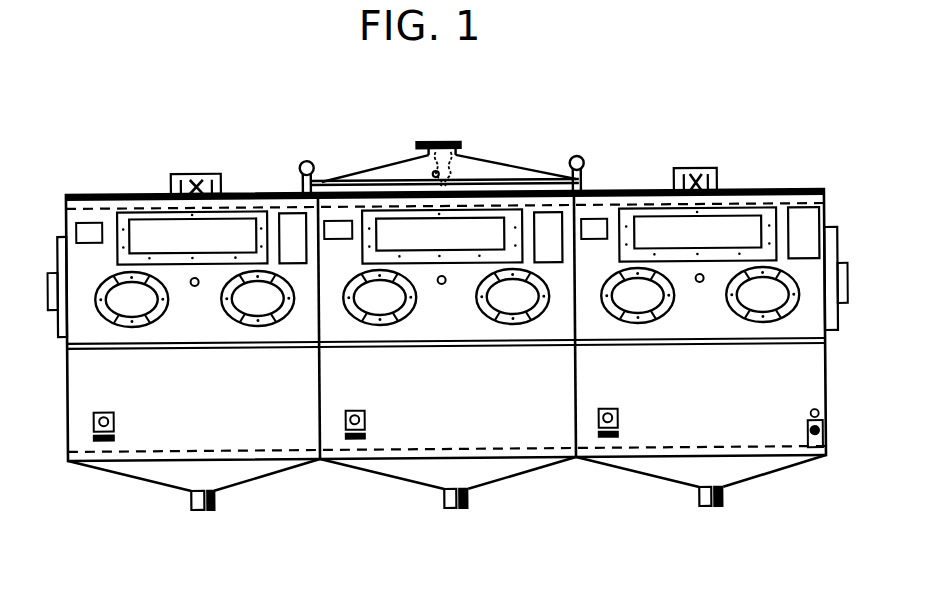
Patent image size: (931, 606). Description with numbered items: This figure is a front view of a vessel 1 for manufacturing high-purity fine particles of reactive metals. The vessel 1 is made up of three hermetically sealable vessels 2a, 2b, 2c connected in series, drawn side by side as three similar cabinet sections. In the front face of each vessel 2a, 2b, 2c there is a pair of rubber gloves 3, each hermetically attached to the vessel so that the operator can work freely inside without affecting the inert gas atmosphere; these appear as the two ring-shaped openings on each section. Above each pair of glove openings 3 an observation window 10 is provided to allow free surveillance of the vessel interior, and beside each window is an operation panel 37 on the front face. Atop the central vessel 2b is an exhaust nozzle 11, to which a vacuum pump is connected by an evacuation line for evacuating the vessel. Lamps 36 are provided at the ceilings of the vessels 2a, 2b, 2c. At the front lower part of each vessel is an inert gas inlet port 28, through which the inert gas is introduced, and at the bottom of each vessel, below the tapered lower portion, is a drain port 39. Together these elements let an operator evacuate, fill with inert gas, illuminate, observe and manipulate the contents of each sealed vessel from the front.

The vessel 1 is at (150, 128).
The hermetically sealable vessel 2a is at (153, 199).
The hermetically sealable vessel 2b is at (517, 180).
The hermetically sealable vessel 2c is at (745, 192).
The rubber gloves 3 is at (150, 296).
The observation window 10 is at (147, 224).
The exhaust nozzle 11 is at (418, 145).
The inert gas inlet port 28 is at (115, 420).
The lamps 36 is at (197, 172).
The operation panel 37 is at (292, 225).
The drain port 39 is at (190, 503).